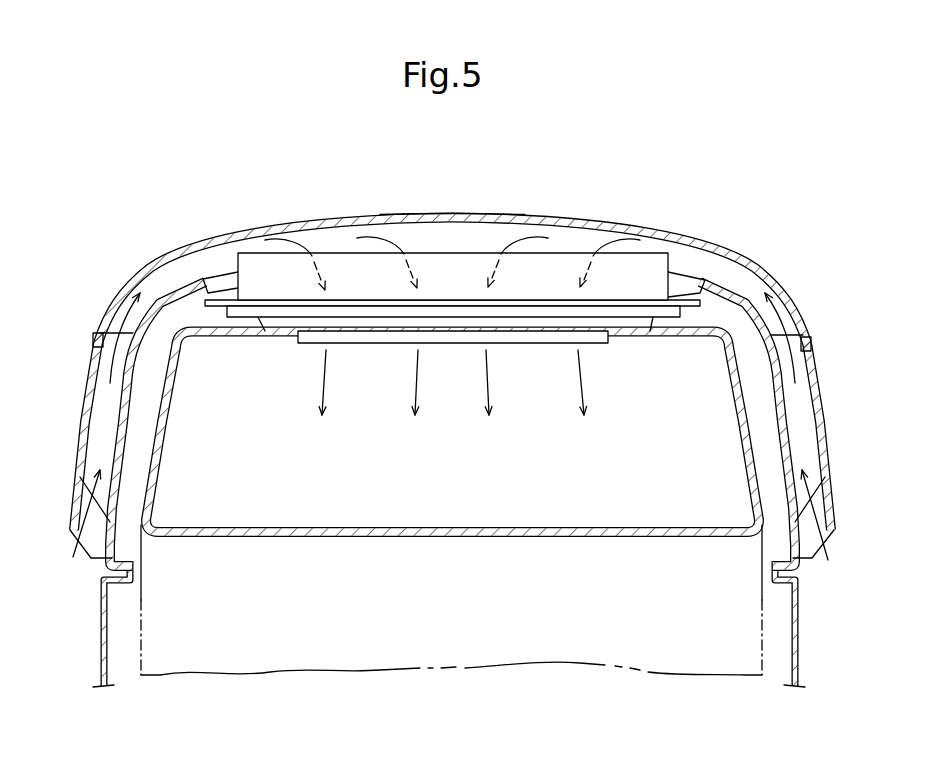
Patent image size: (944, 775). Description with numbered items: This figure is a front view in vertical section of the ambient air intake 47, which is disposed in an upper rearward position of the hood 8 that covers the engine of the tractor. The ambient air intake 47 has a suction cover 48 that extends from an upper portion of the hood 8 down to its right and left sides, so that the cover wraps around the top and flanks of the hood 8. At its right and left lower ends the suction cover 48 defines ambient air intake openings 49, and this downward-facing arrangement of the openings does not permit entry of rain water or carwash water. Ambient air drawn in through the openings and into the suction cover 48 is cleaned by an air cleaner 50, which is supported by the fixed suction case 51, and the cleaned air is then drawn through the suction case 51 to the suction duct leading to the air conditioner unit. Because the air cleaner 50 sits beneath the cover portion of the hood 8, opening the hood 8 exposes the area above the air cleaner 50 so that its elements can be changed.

The ambient air intake 47 is at (579, 216).
The suction cover 48 is at (443, 214).
The air cleaner 50 is at (337, 252).
The hood 8 is at (740, 288).
The ambient air intake openings 49 is at (90, 559).
The suction case 51 is at (430, 539).